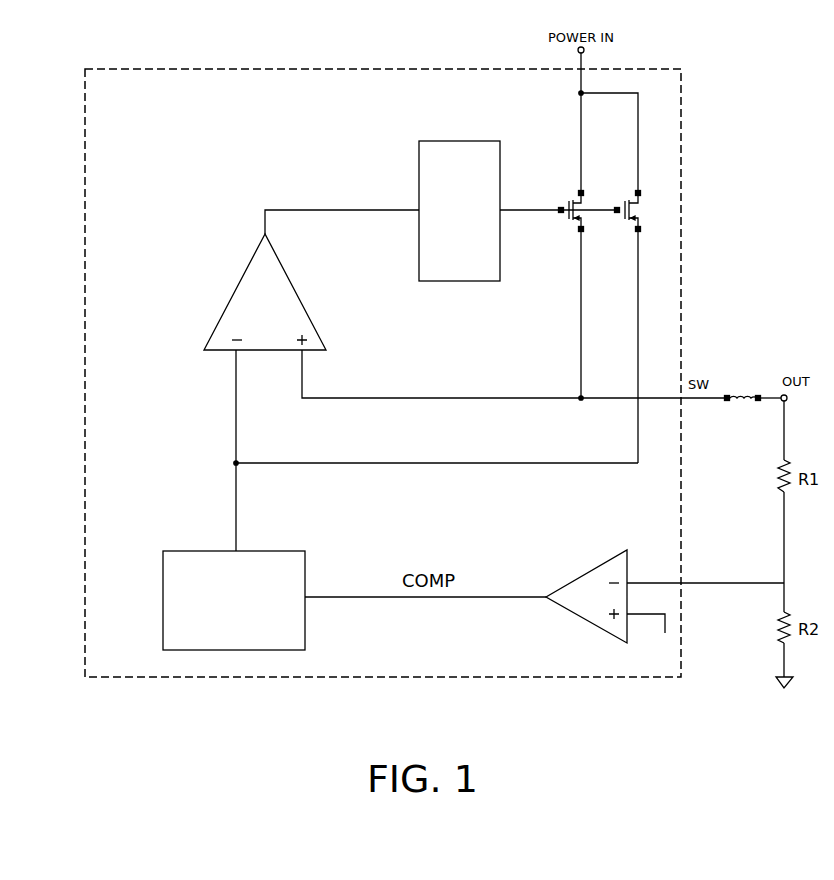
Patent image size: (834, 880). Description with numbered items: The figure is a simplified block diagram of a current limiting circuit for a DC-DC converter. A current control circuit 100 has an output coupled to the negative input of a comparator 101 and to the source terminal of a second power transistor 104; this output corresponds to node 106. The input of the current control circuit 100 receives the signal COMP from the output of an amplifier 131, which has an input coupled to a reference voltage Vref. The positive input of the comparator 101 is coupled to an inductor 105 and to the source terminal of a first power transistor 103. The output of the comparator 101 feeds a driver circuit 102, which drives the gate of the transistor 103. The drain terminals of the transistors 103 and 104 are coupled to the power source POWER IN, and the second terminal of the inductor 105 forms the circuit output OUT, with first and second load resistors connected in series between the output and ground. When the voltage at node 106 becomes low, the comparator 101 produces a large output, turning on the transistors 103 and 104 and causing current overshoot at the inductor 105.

The current control circuit 100 is at (224, 586).
The comparator 101 is at (295, 292).
The driver circuit 102 is at (454, 199).
The first power transistor 103 is at (566, 201).
The second power transistor 104 is at (622, 200).
The inductor 105 is at (742, 385).
The node 106 is at (420, 465).
The amplifier 131 is at (609, 606).